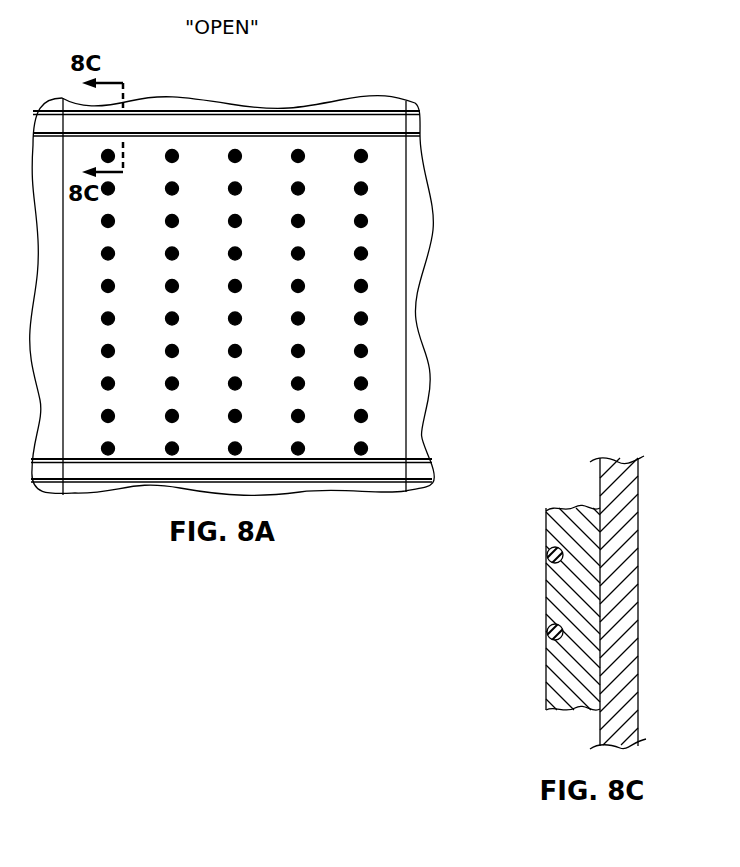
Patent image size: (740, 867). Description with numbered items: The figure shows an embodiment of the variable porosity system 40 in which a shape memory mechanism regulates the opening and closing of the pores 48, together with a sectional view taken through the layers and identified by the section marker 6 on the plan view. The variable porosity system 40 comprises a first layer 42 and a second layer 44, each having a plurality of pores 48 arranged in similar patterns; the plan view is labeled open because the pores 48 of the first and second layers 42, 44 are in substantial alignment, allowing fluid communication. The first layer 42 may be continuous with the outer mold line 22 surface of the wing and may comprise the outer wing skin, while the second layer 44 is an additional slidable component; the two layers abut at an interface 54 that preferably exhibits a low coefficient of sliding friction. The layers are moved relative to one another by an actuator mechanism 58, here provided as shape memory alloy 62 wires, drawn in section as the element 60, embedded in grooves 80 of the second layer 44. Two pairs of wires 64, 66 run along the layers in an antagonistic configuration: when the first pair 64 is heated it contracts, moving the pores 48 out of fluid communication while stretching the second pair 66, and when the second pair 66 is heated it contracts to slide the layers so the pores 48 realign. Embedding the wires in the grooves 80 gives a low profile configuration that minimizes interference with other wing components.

In FIG. 8A, the package 6 is at (148, 122).
In FIG. 8C, the outer mold line 22 is at (639, 644).
In FIG. 8A, the variable porosity system 40 is at (359, 72).
In FIG. 8C, the variable porosity system 40 is at (652, 563).
In FIG. 8A, the first layer 42 is at (413, 228).
In FIG. 8C, the first layer 42 is at (620, 698).
In FIG. 8A, the second layer 44 is at (392, 372).
In FIG. 8C, the second layer 44 is at (558, 697).
In FIG. 8A, the pores 48 is at (360, 215).
In FIG. 8C, the interface 54 is at (603, 512).
In FIG. 8C, the actuator mechanism 58 is at (492, 591).
In FIG. 8C, the aperture 60 is at (492, 591).
In FIG. 8C, the shape memory alloy 62 is at (547, 555).
In FIG. 8A, the first pair of shape memory alloy wires 64 is at (392, 107).
In FIG. 8A, the second pair of shape memory alloy wires 66 is at (393, 134).
In FIG. 8C, the grooves 80 is at (548, 559).